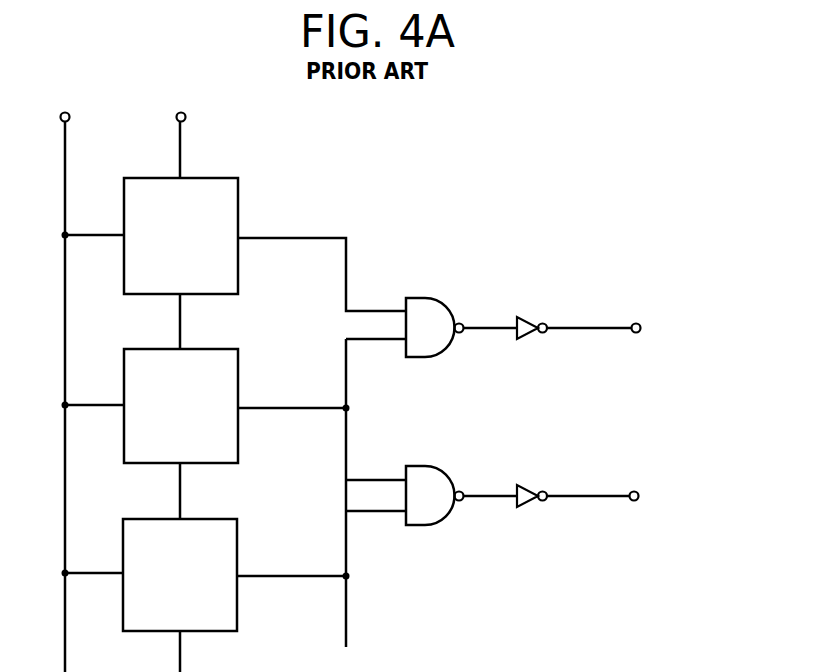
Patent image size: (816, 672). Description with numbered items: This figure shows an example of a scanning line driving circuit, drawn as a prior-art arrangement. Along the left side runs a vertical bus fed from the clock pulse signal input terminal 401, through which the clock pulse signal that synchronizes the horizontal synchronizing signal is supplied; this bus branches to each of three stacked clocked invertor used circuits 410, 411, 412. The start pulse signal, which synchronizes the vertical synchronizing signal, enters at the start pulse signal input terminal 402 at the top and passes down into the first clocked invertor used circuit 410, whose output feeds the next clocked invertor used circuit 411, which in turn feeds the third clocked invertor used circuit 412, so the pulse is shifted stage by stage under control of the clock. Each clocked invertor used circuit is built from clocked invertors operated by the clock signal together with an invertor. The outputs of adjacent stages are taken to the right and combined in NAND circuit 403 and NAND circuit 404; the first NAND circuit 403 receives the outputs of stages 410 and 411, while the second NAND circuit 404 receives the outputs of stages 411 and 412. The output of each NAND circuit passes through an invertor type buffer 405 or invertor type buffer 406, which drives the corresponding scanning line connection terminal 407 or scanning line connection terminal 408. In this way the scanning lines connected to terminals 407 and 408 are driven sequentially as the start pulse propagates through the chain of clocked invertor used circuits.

The clock pulse signal input terminal 401 is at (73, 104).
The start pulse signal input terminal 402 is at (187, 106).
The NAND circuit 403 is at (423, 279).
The NAND circuit 404 is at (423, 441).
The invertor type buffer 405 is at (535, 298).
The invertor type buffer 406 is at (533, 471).
The scanning line connection terminal 407 is at (646, 311).
The scanning line connection terminal 408 is at (640, 481).
The clocked invertor used circuit 410 is at (238, 200).
The clocked invertor used circuit 411 is at (238, 369).
The clocked invertor used circuit 412 is at (237, 540).